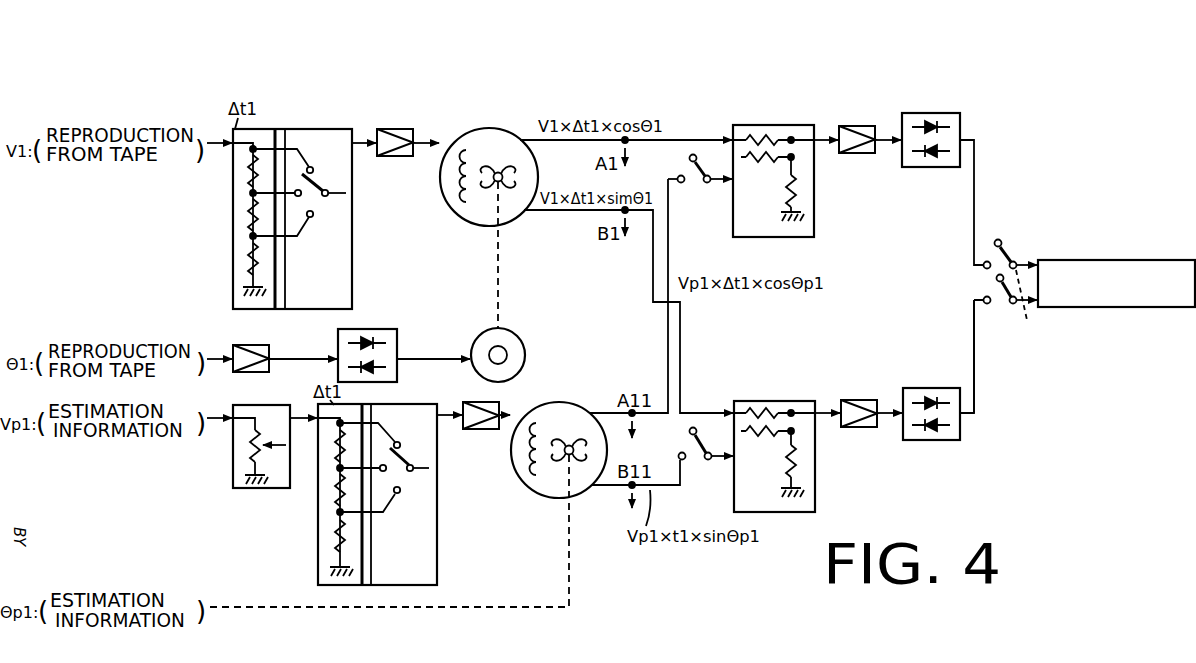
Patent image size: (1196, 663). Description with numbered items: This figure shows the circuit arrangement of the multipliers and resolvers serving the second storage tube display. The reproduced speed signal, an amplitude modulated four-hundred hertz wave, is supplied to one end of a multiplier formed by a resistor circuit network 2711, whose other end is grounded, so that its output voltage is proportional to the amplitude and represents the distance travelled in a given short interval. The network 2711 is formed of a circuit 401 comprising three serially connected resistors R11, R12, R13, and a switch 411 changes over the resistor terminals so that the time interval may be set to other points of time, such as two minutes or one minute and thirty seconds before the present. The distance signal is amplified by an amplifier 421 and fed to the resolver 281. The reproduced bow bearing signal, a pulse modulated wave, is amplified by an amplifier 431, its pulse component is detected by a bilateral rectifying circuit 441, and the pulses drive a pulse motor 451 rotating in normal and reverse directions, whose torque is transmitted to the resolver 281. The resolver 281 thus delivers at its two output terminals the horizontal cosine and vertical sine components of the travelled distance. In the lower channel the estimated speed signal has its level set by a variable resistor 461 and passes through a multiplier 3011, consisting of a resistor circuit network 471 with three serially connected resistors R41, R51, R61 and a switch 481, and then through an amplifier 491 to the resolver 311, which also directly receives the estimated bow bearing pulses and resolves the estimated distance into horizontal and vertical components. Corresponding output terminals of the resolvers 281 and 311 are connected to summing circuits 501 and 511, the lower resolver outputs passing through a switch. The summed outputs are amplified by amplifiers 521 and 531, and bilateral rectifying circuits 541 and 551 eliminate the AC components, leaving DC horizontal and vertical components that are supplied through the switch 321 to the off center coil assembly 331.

The resistor circuit network 2711 is at (298, 203).
The circuit 401 is at (228, 221).
The switch 411 is at (318, 204).
The resistor R13 is at (249, 168).
The resistor R12 is at (249, 204).
The resistor R11 is at (226, 264).
The amplifier 421 is at (391, 129).
The resolver 281 is at (509, 129).
The summing circuit 501 is at (776, 125).
The amplifier 521 is at (852, 126).
The bilateral rectifying circuit 541 is at (960, 123).
The switch 321 is at (1025, 323).
The off center coil assembly 331 is at (1172, 261).
The amplifier 431 is at (268, 348).
The bilateral rectifying circuit 441 is at (397, 345).
The pulse motor 451 is at (522, 352).
The variable resistor 461 is at (247, 489).
The resistor circuit network 471 is at (316, 498).
The resistor R61 is at (338, 444).
The resistor R51 is at (338, 492).
The resistor R41 is at (338, 528).
The switch 481 is at (427, 506).
The multiplier 3011 is at (396, 501).
The amplifier 491 is at (468, 431).
The resolver 311 is at (532, 494).
The summing circuit 511 is at (778, 400).
The amplifier 531 is at (857, 400).
The bilateral rectifying circuit 551 is at (919, 390).